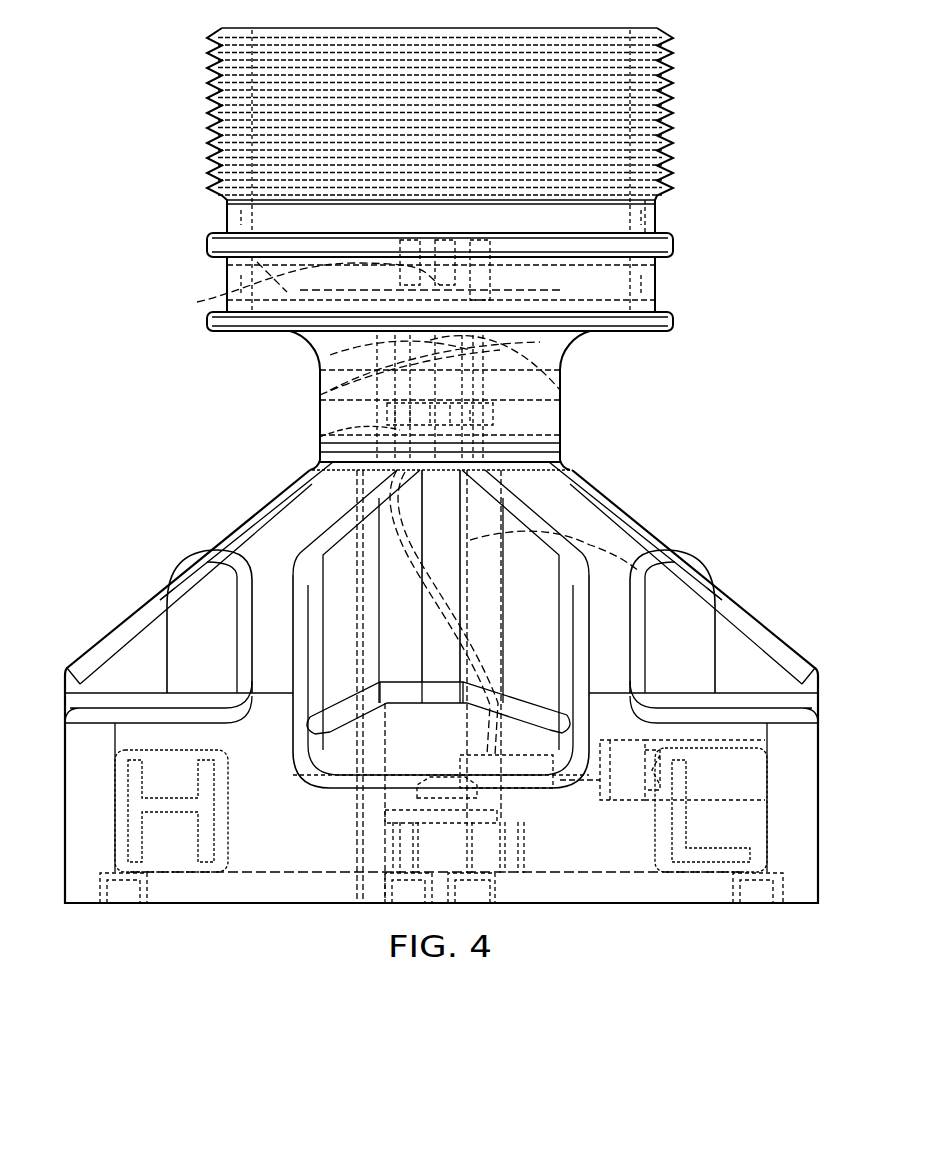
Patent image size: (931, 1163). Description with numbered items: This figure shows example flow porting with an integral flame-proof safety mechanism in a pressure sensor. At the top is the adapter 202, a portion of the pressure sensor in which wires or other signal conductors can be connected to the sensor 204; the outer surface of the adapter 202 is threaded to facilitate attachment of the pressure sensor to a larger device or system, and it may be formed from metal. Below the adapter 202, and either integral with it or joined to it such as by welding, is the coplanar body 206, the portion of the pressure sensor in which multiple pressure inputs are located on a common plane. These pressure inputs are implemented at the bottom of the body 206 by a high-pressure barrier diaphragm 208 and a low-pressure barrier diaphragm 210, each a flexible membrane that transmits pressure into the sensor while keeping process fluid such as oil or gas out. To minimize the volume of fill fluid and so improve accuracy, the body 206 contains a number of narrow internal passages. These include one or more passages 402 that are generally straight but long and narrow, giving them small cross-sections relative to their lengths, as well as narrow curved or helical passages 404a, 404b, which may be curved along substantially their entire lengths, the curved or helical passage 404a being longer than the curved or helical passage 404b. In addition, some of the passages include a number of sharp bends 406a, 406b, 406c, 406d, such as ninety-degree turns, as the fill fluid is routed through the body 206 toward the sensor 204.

The adapter 202 is at (157, 90).
The sensor 204 is at (562, 390).
The coplanar body 206 is at (94, 632).
The high-pressure barrier diaphragm 208 is at (268, 898).
The low-pressure barrier diaphragm 210 is at (613, 898).
The passages 402 is at (345, 804).
The curved or helical passage 404a is at (592, 520).
The curved or helical passage 404b is at (320, 390).
The sharp bend 406a is at (385, 826).
The sharp bend 406b is at (527, 795).
The sharp bend 406c is at (320, 436).
The sharp bend 406d is at (238, 300).